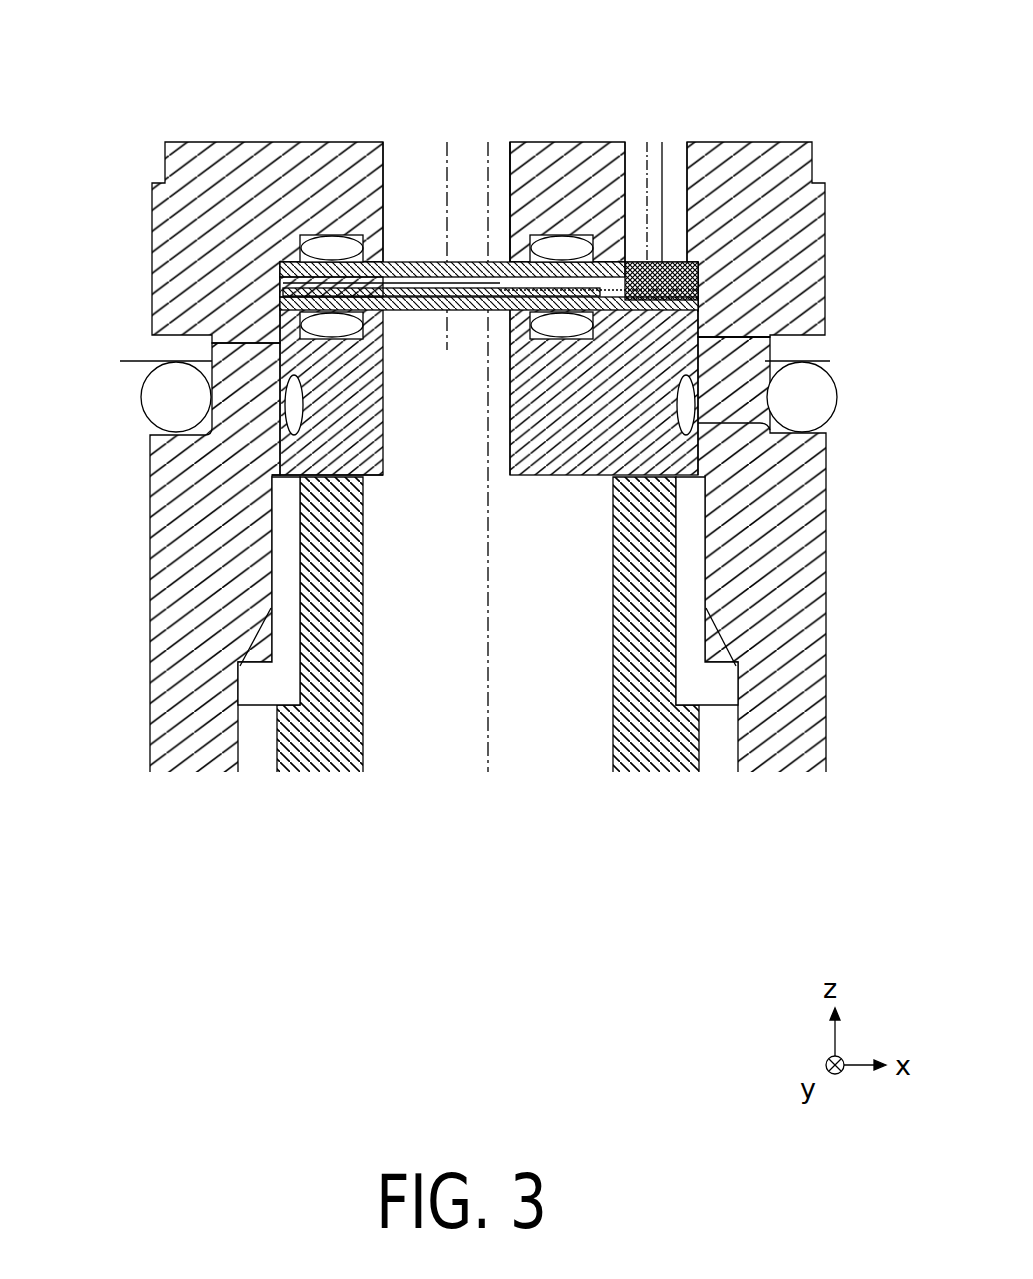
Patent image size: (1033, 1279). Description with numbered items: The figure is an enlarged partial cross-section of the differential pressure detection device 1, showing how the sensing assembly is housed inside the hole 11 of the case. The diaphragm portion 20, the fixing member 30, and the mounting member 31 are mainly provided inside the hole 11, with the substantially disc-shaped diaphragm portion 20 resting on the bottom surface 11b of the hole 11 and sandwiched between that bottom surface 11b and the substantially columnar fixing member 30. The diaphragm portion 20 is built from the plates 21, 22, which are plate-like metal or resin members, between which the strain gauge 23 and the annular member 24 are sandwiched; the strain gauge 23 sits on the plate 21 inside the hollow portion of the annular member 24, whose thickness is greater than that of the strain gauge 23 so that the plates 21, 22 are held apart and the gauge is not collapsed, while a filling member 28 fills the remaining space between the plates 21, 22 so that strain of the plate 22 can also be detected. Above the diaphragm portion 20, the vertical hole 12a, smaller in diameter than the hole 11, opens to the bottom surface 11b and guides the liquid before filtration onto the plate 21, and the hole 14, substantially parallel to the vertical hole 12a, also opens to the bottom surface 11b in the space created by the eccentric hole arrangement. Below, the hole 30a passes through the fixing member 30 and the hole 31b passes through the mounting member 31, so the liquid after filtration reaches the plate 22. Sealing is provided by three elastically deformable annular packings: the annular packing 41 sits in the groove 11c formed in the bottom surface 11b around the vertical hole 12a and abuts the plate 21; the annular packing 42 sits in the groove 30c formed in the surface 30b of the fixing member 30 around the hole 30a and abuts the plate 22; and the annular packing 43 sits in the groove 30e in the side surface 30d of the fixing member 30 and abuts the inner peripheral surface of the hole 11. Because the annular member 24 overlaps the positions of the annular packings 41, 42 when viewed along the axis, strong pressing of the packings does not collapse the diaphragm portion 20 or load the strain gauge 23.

The differential pressure detection device 1 is at (782, 23).
The hole 11 is at (240, 763).
The bottom surface 11b is at (638, 264).
The groove 11c is at (558, 243).
The vertical hole 12a is at (404, 158).
The hole 14 is at (688, 166).
The diaphragm portion 20 is at (353, 293).
The plate 21 is at (290, 268).
The plate 22 is at (292, 305).
The strain gauge 23 is at (290, 285).
The annular member 24 is at (292, 292).
The filling member 28 is at (226, 327).
The fixing member 30 is at (650, 463).
The hole 30a is at (277, 473).
The surface 30b is at (697, 300).
The groove 30c is at (697, 292).
The side surface 30d is at (700, 345).
The groove 30e is at (700, 426).
The mounting member 31 is at (650, 650).
The hole 31b is at (385, 626).
The annular packing 41 is at (330, 242).
The annular packing 42 is at (556, 330).
The annular packing 43 is at (288, 407).